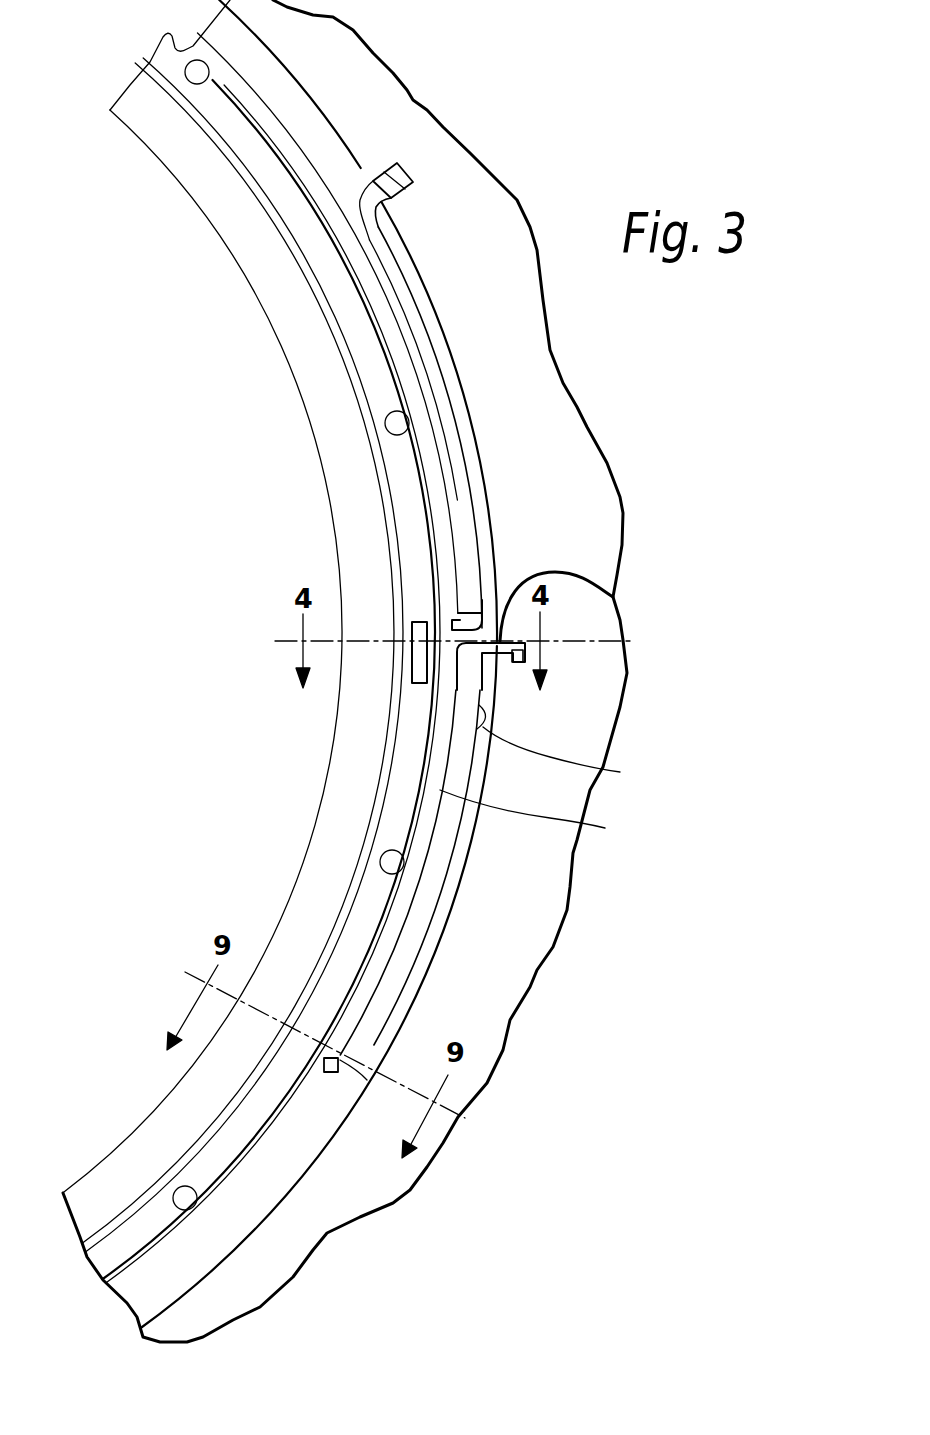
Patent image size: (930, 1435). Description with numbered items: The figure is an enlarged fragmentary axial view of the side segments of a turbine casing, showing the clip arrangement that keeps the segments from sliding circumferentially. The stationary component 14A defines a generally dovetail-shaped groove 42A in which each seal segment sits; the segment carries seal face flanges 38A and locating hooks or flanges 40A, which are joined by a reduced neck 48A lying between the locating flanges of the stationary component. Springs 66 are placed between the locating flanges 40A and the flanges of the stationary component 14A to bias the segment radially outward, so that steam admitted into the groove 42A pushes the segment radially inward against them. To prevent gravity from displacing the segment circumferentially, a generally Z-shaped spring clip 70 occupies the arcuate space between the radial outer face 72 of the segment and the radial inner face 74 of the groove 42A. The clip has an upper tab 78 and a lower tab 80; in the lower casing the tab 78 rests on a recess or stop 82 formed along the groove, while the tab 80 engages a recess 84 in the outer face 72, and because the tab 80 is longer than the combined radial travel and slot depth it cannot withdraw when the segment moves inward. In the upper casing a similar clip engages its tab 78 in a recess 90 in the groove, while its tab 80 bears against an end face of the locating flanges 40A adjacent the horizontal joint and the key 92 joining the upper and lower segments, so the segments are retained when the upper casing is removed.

The stationary component 14A is at (510, 983).
The seal face flanges 38A is at (323, 856).
The reduced neck 48A is at (407, 760).
The springs 66 is at (297, 182).
The locating hooks or flanges 40A is at (427, 823).
The dovetail-shaped groove 42A is at (463, 518).
The tab 78 is at (374, 172).
The recess 90 is at (411, 192).
The tab 80 is at (447, 623).
The recess or stop 82 is at (510, 667).
The key 92 is at (417, 662).
The spring clips 70 is at (467, 748).
The radial inner face 74 is at (573, 757).
The radial outer face 72 is at (543, 817).
The recess 84 is at (332, 1072).